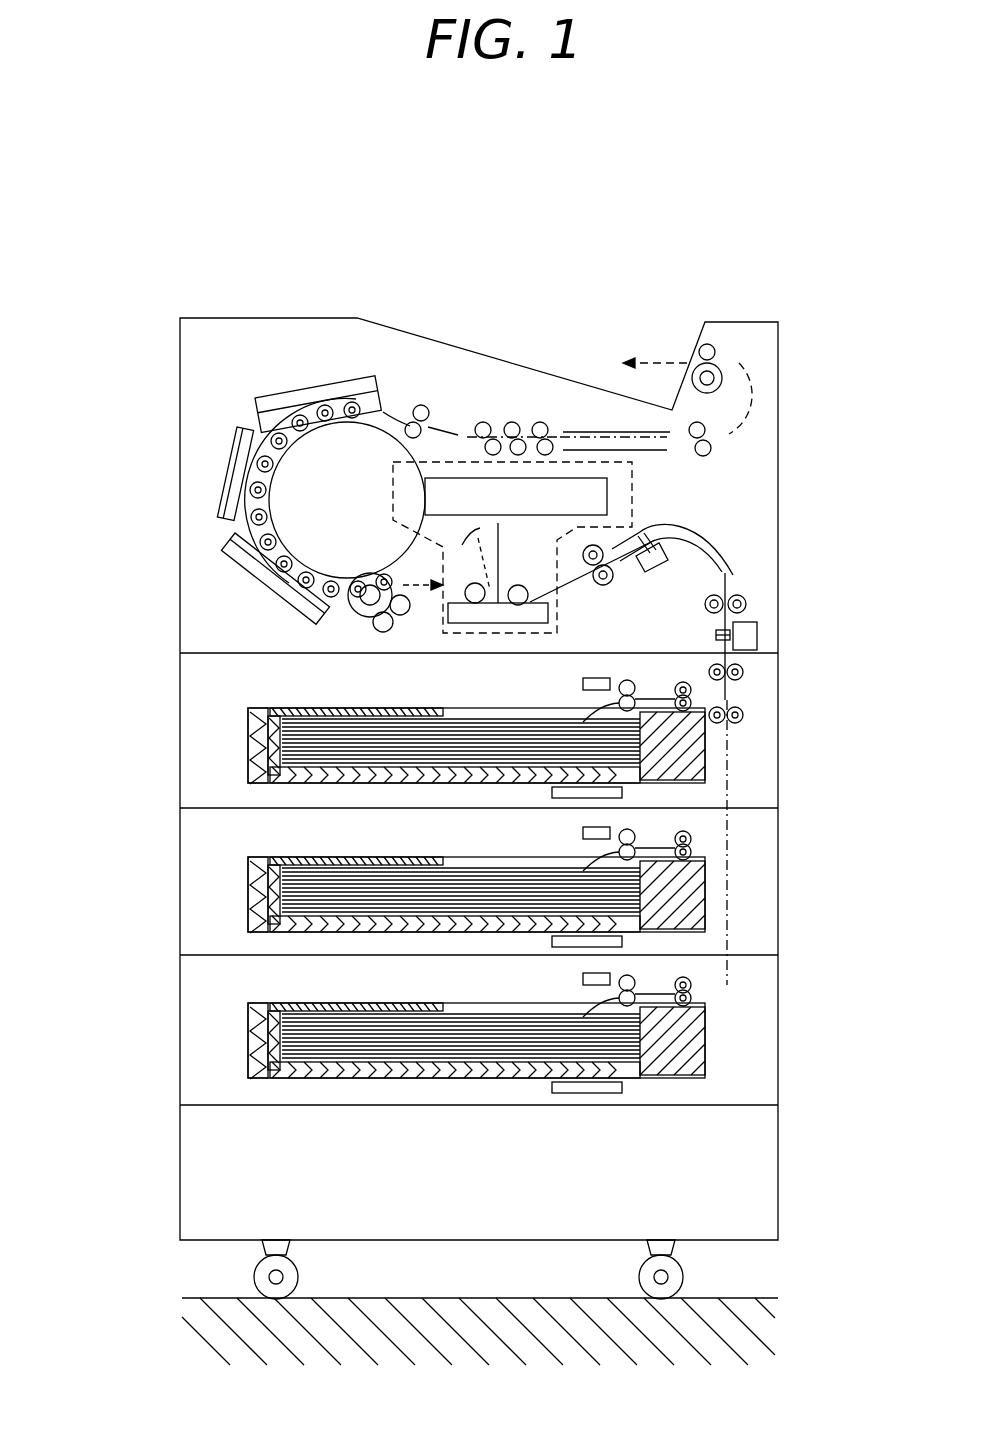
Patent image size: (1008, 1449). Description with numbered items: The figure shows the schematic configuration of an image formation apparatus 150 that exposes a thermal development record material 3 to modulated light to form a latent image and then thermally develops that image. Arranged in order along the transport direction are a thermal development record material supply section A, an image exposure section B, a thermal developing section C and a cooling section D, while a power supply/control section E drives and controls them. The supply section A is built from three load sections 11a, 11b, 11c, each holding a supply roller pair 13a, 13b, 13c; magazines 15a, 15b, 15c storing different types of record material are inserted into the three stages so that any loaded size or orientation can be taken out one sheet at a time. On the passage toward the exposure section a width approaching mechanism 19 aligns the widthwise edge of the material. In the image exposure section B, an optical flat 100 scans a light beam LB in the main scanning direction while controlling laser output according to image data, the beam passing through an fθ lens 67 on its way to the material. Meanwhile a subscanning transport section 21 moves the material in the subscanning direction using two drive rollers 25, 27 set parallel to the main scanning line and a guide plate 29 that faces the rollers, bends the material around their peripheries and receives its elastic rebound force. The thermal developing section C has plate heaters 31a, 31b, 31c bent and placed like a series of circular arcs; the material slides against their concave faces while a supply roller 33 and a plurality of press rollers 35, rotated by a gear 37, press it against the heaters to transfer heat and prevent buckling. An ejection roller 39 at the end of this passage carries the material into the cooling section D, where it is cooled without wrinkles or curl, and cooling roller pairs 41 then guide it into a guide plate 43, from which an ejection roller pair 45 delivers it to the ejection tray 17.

The image formation apparatus 150 is at (588, 208).
The ejection tray 17 is at (568, 378).
The guide plate 43 is at (597, 418).
The ejection roller pair 45 is at (719, 333).
The ejection roller 39 is at (421, 405).
The cooling section D is at (481, 390).
The cooling roller pairs 41 is at (540, 422).
The plate heater 31c is at (305, 393).
The gear 37 is at (383, 417).
The thermal developing section C is at (245, 386).
The plate heater 31b is at (228, 482).
The press rollers 35 is at (222, 513).
The plate heater 31a is at (248, 578).
The supply roller 33 is at (305, 615).
The optical flat 100 is at (637, 474).
The light beam LB is at (463, 573).
The thermal development record material 3 is at (553, 593).
The fθ lens 67 is at (705, 603).
The width approaching mechanism 19 is at (758, 633).
The guide plate 29 is at (547, 623).
The subscanning transport section 21 is at (447, 613).
The image exposure section B is at (448, 641).
The drive roller 27 is at (475, 603).
The drive roller 25 is at (522, 605).
The magazine 15a is at (312, 708).
The magazine 15b is at (456, 883).
The magazine 15c is at (455, 1032).
The supply roller pair 13a is at (652, 683).
The supply roller pair 13b is at (721, 832).
The supply roller pair 13c is at (720, 976).
The load section 11a is at (697, 740).
The load section 11b is at (742, 895).
The load section 11c is at (741, 1041).
The thermal development record material supply section A is at (858, 678).
The power supply/control section E is at (858, 1108).